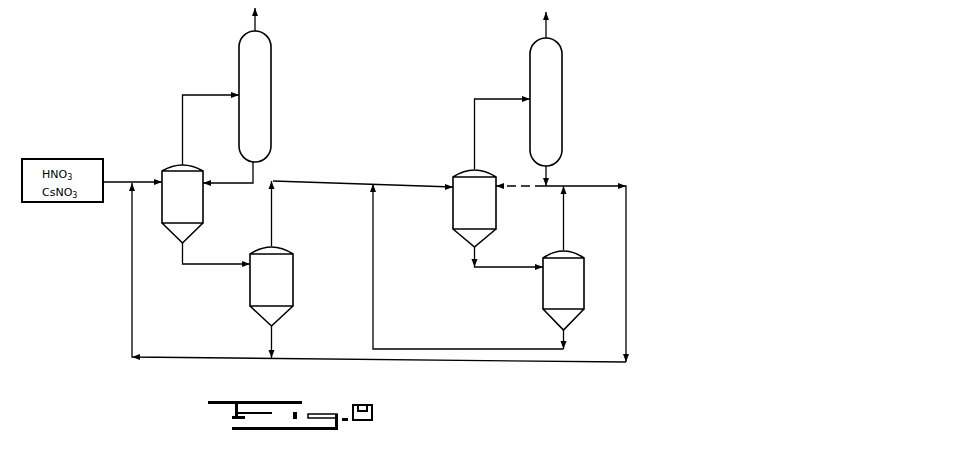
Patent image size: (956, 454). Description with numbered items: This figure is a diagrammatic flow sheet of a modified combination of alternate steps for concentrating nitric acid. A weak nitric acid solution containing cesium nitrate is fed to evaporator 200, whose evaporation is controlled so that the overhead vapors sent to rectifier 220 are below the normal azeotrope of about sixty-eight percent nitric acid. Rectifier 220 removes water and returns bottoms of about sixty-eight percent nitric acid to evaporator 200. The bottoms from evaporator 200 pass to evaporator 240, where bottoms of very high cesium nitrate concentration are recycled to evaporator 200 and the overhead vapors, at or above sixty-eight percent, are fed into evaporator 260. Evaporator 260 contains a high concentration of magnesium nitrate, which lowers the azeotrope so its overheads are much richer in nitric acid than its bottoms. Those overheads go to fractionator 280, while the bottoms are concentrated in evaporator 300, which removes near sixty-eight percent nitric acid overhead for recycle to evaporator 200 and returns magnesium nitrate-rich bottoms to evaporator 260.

The evaporator 200 is at (182, 204).
The rectifier 220 is at (270, 55).
The evaporator 240 is at (271, 286).
The evaporator 260 is at (474, 208).
The fractionator 280 is at (567, 53).
The evaporator 300 is at (563, 290).